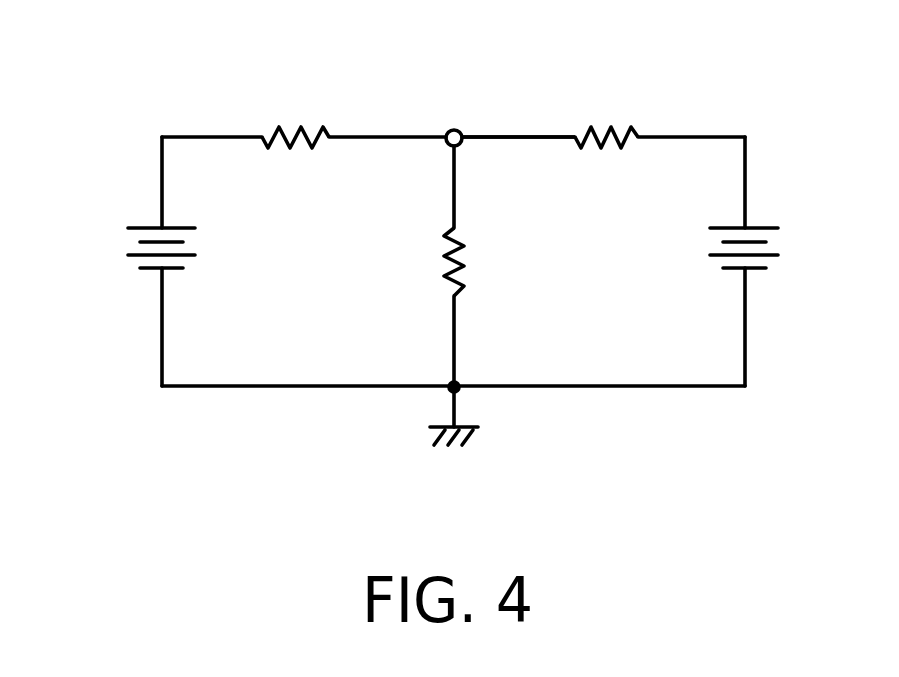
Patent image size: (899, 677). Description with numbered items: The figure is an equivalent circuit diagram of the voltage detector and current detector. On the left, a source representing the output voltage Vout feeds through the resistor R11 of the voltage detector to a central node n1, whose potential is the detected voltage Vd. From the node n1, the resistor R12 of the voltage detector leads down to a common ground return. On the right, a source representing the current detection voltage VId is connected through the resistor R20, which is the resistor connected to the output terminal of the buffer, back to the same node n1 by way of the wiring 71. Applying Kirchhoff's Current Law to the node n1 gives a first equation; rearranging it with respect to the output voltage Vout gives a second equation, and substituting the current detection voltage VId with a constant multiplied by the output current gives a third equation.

The wiring between node n1 and resistor R20 71 is at (527, 137).
The node n1 is at (462, 146).
The resistor R11 is at (296, 114).
The resistor R12 is at (493, 262).
The resistor R20 is at (606, 112).
The detected voltage Vd is at (455, 96).
The output voltage Vout is at (111, 249).
The current detection voltage VId is at (781, 249).